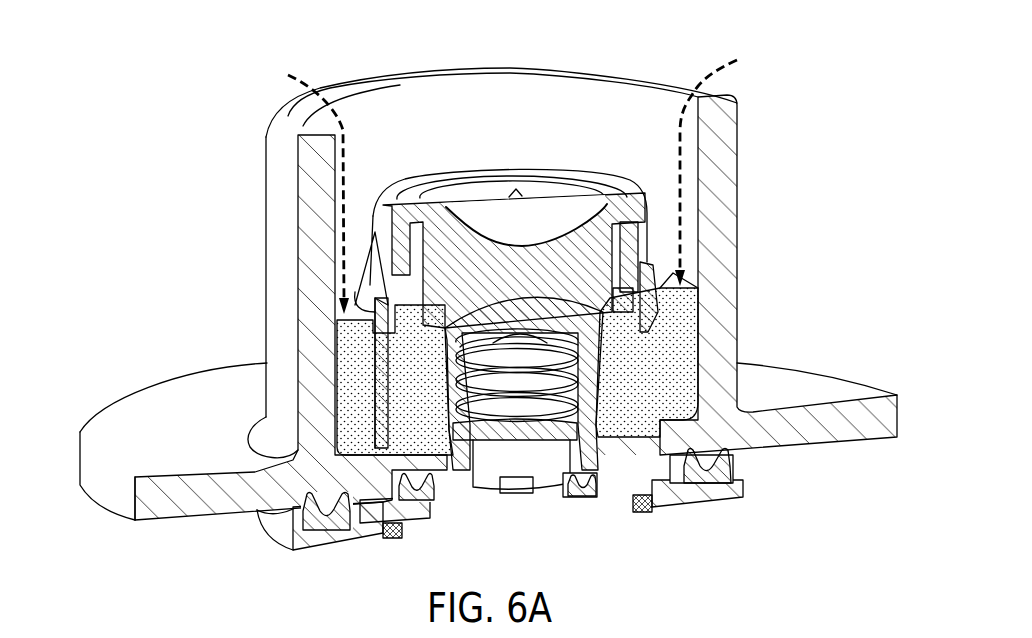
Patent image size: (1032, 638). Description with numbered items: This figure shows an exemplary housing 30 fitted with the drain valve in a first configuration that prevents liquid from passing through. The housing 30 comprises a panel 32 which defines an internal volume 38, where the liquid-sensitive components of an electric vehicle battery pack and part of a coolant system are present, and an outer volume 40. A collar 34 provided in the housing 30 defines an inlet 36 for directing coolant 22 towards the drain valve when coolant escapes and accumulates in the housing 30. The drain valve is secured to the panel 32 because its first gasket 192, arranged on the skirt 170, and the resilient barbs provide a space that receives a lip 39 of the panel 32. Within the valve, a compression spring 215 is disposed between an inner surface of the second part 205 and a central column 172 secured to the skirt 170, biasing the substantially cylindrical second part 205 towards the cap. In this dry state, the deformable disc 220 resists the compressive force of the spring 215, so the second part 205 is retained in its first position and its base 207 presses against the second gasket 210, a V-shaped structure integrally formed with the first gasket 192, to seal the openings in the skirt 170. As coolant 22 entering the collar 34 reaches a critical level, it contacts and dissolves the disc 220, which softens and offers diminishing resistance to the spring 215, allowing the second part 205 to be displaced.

The housing 30 is at (483, 294).
The panel 32 is at (105, 428).
The collar 34 is at (733, 160).
The inlet 36 is at (461, 84).
The internal volume 38 is at (166, 358).
The outer volume 40 is at (191, 571).
The coolant 22 is at (690, 327).
The deformable disc 220 is at (602, 212).
The compression spring 215 is at (440, 375).
The central column 172 is at (473, 442).
The second part 205 is at (445, 467).
The base 207 is at (587, 473).
The second gasket 210 is at (620, 475).
The skirt 170 is at (735, 497).
The first gasket 192 is at (318, 527).
The lip 39 is at (362, 485).